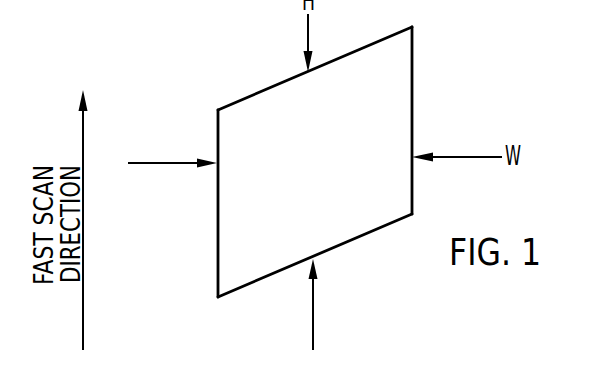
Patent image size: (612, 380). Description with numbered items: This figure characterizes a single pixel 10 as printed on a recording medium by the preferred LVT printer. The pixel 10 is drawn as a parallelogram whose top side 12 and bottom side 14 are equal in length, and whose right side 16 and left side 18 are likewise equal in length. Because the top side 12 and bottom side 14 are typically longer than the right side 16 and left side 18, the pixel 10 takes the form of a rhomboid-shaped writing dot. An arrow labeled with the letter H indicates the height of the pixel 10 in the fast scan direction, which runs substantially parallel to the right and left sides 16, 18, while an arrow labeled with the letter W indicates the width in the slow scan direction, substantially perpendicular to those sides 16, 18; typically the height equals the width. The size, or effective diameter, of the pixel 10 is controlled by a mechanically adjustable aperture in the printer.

The pixel 10 is at (331, 168).
The top side 12 is at (370, 40).
The bottom side 14 is at (262, 280).
The right side 16 is at (412, 133).
The left side 18 is at (217, 219).